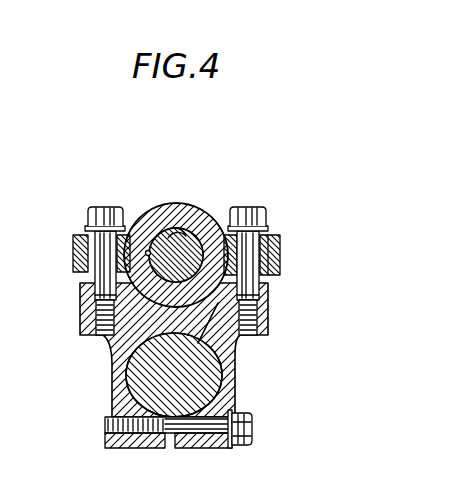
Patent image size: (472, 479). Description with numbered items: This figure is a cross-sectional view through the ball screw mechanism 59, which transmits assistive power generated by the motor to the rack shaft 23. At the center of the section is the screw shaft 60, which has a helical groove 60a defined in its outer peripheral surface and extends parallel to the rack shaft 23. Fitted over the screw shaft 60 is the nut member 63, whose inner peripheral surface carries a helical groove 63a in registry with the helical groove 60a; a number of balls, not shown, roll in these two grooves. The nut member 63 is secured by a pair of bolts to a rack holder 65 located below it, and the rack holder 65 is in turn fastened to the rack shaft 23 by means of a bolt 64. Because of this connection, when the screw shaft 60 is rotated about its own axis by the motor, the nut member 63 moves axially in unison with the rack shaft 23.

The rack shaft 23 is at (183, 390).
The ball screw mechanism 59 is at (232, 191).
The screw shaft 60 is at (190, 232).
The helical groove 60a is at (176, 228).
The nut member 63 is at (142, 207).
The helical groove 63a is at (232, 338).
The bolt 64 is at (254, 429).
The rack holder 65 is at (110, 405).